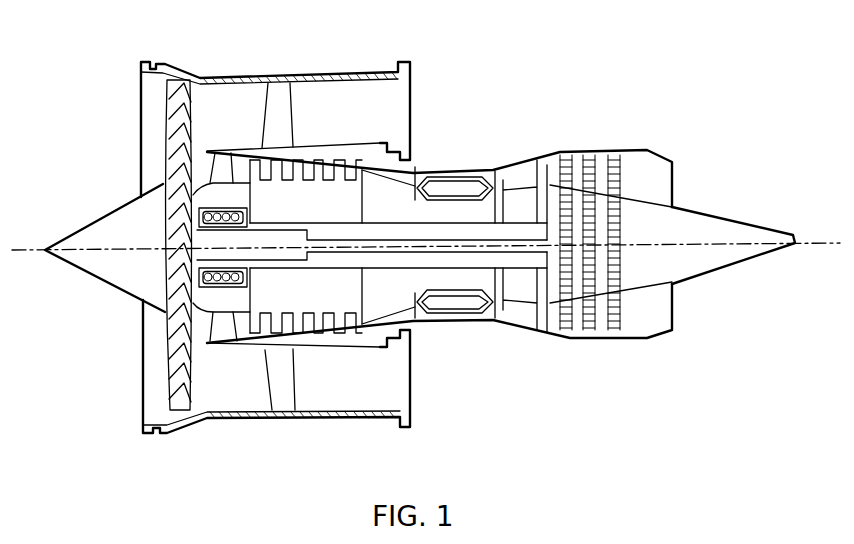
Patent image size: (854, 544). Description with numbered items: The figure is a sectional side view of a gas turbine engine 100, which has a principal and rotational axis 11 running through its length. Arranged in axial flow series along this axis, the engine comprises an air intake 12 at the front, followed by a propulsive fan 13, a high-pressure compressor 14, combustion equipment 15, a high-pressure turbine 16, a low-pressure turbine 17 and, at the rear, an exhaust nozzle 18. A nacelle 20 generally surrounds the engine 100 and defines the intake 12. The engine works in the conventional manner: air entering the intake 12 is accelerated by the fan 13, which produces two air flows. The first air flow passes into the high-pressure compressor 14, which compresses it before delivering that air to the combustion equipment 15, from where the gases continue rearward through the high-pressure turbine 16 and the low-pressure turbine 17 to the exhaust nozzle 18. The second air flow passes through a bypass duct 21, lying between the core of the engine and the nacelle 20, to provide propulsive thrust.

The gas turbine engine 100 is at (501, 120).
The principal and rotational axis 11 is at (44, 249).
The air intake 12 is at (140, 123).
The propulsive fan 13 is at (190, 82).
The high-pressure compressor 14 is at (343, 193).
The combustion equipment 15 is at (442, 186).
The high-pressure turbine 16 is at (543, 178).
The low-pressure turbine 17 is at (616, 190).
The exhaust nozzle 18 is at (660, 188).
The nacelle 20 is at (235, 418).
The bypass duct 21 is at (333, 400).